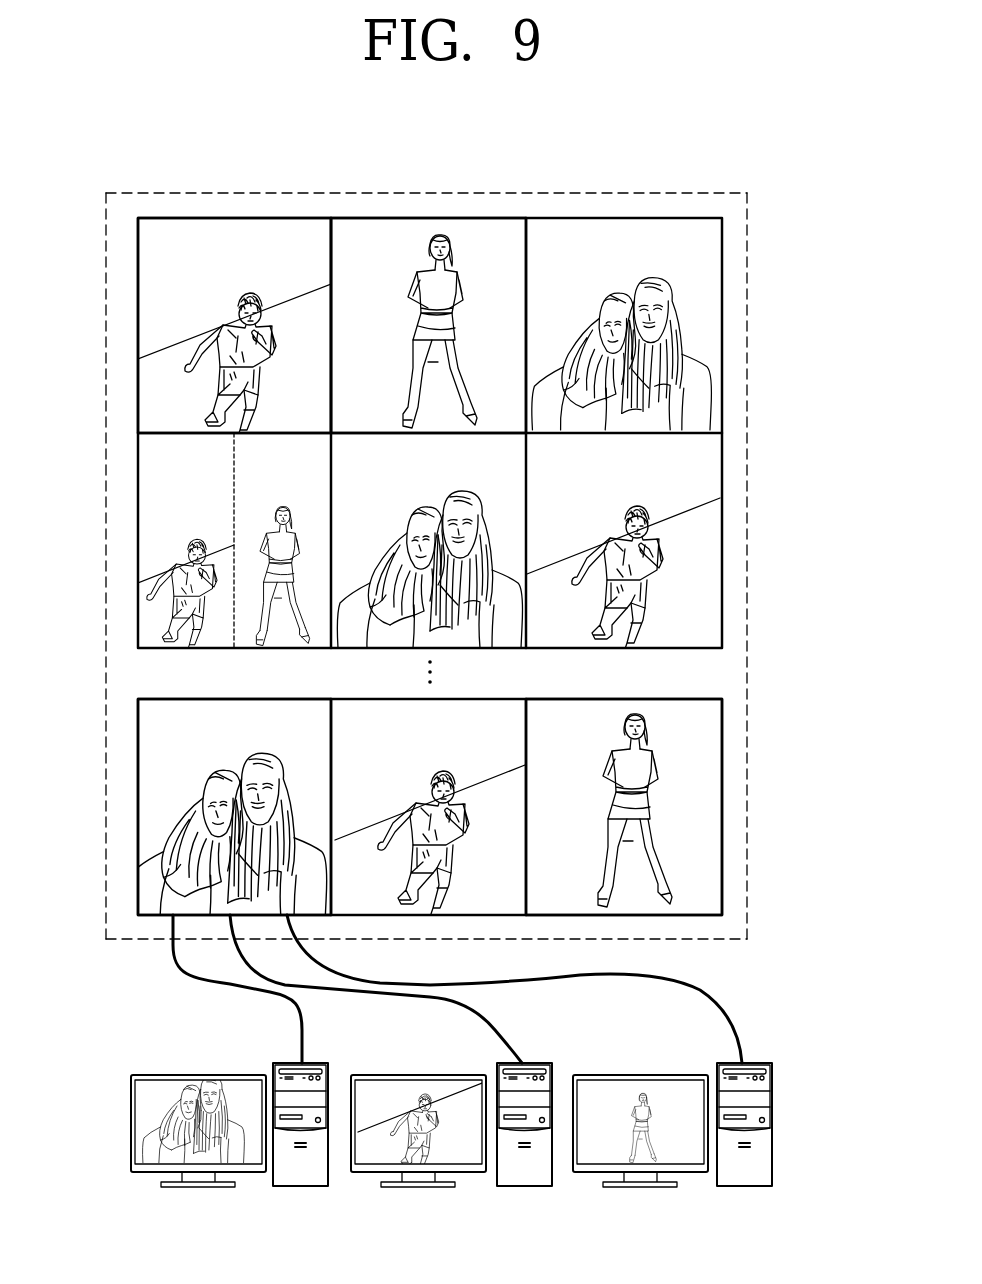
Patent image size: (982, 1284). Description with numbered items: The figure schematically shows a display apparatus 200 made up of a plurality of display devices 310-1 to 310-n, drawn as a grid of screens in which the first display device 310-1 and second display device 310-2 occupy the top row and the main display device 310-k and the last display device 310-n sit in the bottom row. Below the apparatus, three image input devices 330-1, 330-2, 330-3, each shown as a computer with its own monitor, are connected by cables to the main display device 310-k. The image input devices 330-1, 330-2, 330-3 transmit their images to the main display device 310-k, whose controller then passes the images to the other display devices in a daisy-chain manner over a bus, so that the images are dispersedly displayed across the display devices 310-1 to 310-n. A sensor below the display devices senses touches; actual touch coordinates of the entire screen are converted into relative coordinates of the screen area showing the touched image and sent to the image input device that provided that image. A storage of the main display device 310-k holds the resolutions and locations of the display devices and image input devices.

The display apparatus 200 is at (695, 193).
The display device 310-1 is at (235, 218).
The display device 310-2 is at (431, 218).
The main display device 310-k is at (137, 805).
The display device 310-n is at (722, 808).
The image input device 330-1 is at (157, 1075).
The image input device 330-2 is at (378, 1075).
The image input device 330-3 is at (598, 1075).